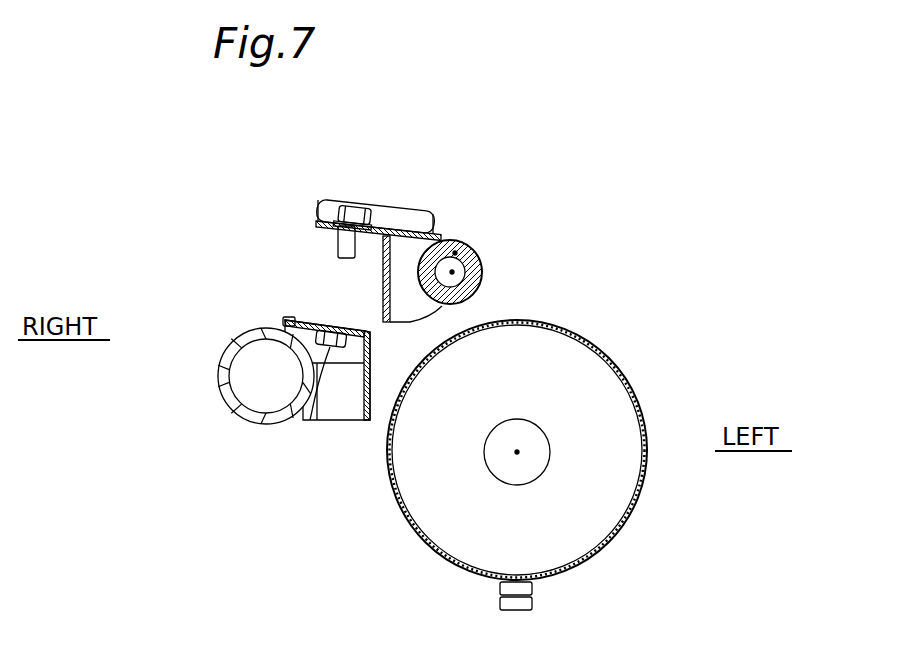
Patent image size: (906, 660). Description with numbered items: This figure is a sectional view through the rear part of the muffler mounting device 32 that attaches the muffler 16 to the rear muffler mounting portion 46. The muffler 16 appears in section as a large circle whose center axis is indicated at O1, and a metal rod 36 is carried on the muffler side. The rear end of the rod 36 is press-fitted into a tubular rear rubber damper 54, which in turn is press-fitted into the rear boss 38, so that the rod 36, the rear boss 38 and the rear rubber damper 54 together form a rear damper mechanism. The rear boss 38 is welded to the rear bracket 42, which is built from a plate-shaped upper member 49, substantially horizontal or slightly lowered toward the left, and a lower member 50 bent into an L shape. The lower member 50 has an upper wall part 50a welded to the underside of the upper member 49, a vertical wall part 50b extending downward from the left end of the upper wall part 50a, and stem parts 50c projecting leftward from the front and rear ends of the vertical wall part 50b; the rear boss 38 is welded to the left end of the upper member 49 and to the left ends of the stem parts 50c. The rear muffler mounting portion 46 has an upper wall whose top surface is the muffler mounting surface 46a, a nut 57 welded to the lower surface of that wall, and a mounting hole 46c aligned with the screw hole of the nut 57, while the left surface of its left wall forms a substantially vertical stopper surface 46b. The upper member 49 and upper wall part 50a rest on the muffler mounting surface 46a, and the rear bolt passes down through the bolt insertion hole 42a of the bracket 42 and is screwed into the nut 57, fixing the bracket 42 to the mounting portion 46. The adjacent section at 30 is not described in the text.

The muffler 16 is at (627, 520).
The roll axis center O1 is at (517, 452).
The pipe 30 is at (222, 392).
The muffler mounting device 32 is at (390, 253).
The rod 36 is at (452, 272).
The rear boss 38 is at (485, 250).
The rear bracket 42 is at (322, 184).
The bolt insertion hole 42a is at (322, 212).
The rear muffler mounting portion 46 is at (258, 376).
The muffler mounting surface 46a is at (298, 318).
The stopper surface 46b is at (373, 402).
The mounting hole 46c is at (355, 312).
The upper member 49 is at (418, 236).
The lower member 50 is at (372, 305).
The upper wall part 50a is at (320, 232).
The vertical wall part 50b is at (383, 283).
The stem parts 50c is at (412, 302).
The rear rubber damper 54 is at (455, 253).
The nut 57 is at (310, 420).